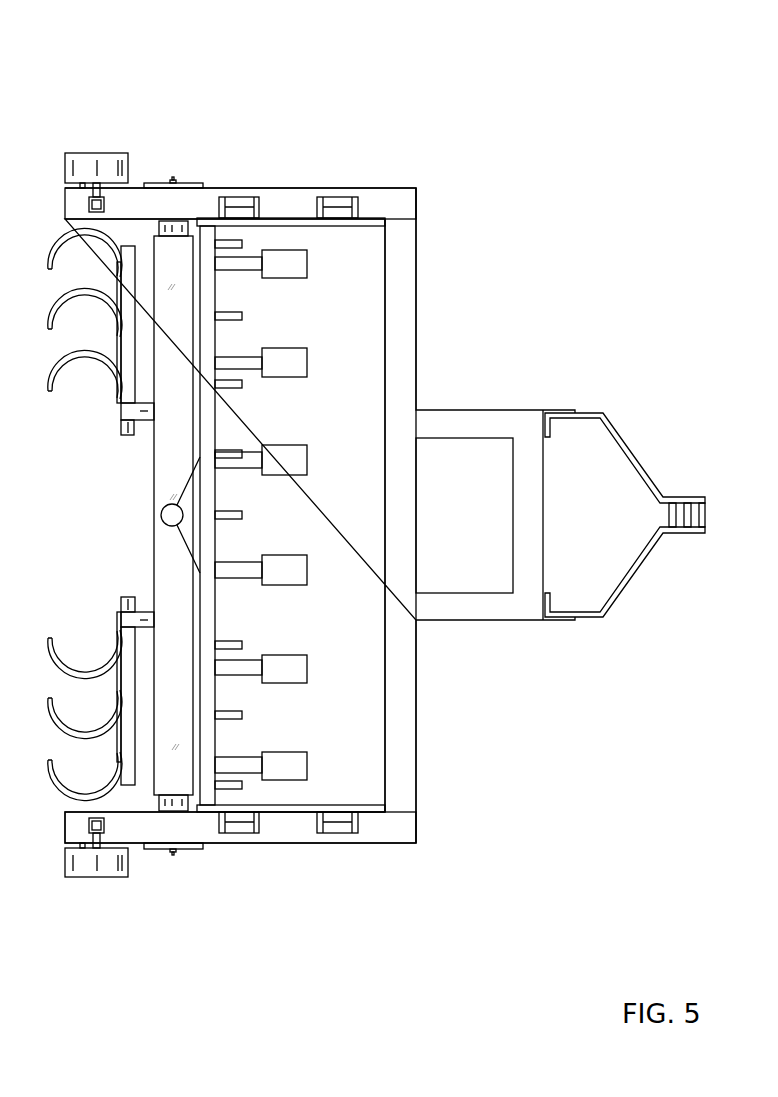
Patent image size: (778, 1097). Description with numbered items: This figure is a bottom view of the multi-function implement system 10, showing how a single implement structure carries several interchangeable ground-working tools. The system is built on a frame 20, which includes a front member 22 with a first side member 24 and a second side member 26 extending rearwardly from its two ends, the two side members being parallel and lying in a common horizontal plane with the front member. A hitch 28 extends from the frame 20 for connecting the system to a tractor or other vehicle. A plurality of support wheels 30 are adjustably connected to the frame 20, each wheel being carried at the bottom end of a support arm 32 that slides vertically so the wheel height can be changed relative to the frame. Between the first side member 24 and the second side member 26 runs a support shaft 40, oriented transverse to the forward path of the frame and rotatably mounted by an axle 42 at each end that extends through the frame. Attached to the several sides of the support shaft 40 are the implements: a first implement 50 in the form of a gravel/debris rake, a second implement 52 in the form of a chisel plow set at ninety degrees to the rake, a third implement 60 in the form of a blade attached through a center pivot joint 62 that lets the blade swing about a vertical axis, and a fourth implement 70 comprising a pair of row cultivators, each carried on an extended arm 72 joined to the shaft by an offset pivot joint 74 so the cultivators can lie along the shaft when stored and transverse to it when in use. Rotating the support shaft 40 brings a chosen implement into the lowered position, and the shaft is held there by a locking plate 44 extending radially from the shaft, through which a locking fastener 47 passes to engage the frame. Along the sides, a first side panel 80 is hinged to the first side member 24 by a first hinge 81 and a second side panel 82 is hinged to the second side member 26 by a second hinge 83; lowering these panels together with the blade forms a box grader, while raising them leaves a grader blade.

The multi-function implement system 10 is at (603, 108).
The frame 20 is at (424, 740).
The front member 22 is at (402, 332).
The first side member 24 is at (357, 843).
The second side member 26 is at (330, 188).
The hitch 28 is at (636, 442).
The support wheels 30 is at (82, 153).
The support arm 32 is at (89, 205).
The support shaft 40 is at (165, 297).
The axle 42 is at (168, 230).
The locking plate 44 is at (193, 183).
The locking fastener 47 is at (173, 180).
The first implement 50 is at (252, 641).
The second implement 52 is at (277, 790).
The third implement 60 is at (225, 425).
The center pivot joint 62 is at (172, 515).
The fourth implement 70 is at (86, 370).
The extended arm 72 is at (128, 430).
The offset pivot joint 74 is at (147, 612).
The first side panel 80 is at (340, 805).
The first hinge 81 is at (340, 833).
The second side panel 82 is at (360, 240).
The second hinge 83 is at (240, 197).